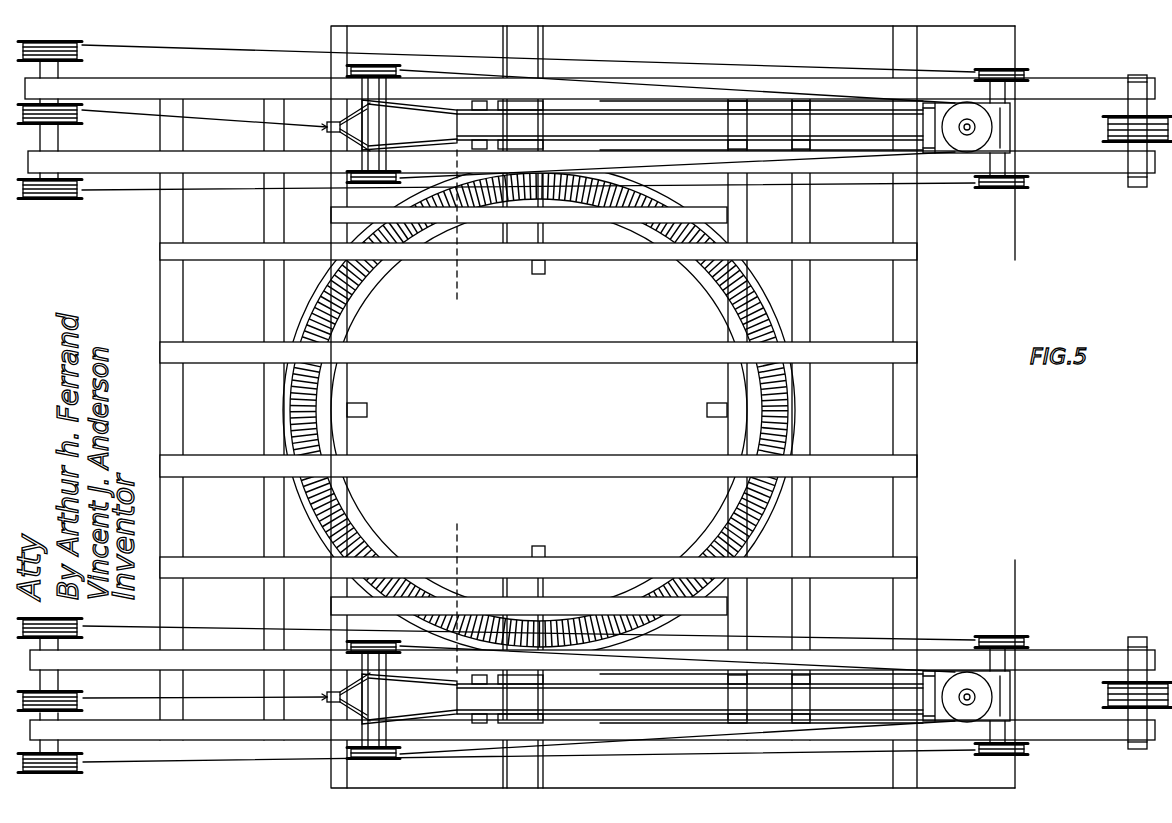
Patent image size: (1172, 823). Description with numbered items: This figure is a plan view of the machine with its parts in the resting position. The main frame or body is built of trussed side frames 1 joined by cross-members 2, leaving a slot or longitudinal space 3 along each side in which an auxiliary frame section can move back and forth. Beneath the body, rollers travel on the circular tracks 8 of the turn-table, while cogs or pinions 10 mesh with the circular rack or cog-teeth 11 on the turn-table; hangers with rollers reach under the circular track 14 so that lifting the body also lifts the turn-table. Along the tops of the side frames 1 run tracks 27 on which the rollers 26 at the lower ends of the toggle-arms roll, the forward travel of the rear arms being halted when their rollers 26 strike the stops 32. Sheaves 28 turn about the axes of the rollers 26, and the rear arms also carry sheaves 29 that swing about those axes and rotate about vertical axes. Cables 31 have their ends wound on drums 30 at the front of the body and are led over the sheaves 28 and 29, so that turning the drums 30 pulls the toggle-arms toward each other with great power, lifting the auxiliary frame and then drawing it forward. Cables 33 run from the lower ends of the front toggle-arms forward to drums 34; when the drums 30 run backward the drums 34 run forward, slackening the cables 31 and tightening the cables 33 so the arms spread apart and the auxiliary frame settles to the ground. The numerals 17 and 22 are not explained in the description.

The side frames 1 is at (1040, 166).
The cross-members 2 is at (910, 312).
The slot or longitudinal space 3 is at (651, 106).
The circular tracks 8 is at (358, 297).
The cogs or pinions 10 is at (310, 398).
The circular rack or cog-teeth 11 is at (363, 278).
The circular track 14 is at (350, 323).
The pivot axis line 17 is at (466, 412).
The sheave 22 is at (1123, 670).
The rollers 26 is at (997, 86).
The tracks 27 is at (237, 158).
The sheaves 28 is at (362, 98).
The sheaves 29 is at (975, 142).
The drums 30 is at (84, 60).
The cables 31 is at (236, 51).
The stops 32 is at (1023, 92).
The cables 33 is at (209, 120).
The drums 34 is at (57, 138).